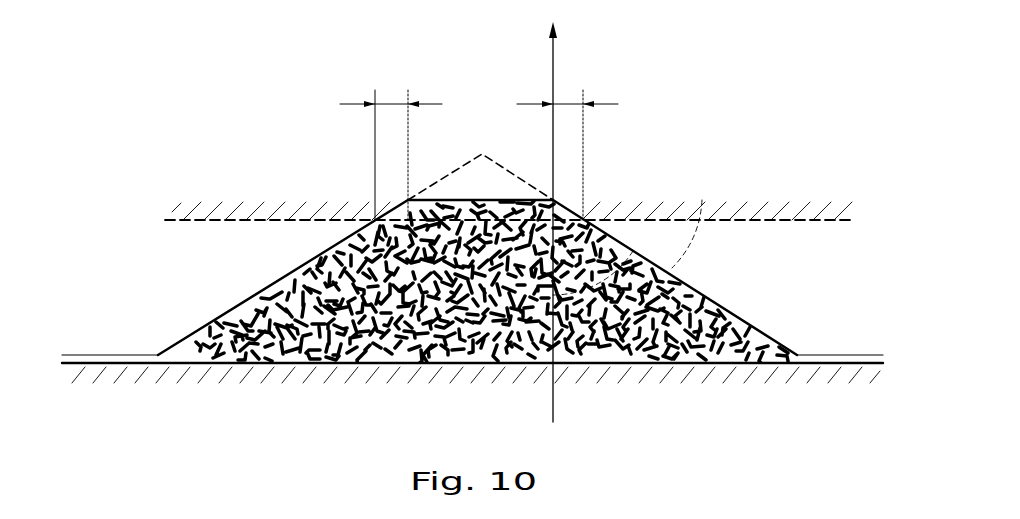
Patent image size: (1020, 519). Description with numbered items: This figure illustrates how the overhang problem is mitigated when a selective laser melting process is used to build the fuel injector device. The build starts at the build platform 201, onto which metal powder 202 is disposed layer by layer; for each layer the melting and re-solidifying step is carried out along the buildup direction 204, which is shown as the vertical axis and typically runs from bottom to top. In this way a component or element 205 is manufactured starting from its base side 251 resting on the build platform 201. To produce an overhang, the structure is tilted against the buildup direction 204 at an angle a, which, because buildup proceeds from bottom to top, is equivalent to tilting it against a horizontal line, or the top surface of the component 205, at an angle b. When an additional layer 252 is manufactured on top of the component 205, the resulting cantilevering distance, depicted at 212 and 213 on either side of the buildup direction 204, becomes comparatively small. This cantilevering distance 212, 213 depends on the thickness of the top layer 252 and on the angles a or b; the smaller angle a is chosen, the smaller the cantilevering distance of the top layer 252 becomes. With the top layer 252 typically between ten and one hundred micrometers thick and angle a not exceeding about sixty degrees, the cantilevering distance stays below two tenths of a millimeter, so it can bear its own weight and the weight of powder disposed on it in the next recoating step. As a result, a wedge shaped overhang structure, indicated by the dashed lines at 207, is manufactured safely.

The build platform 201 is at (723, 416).
The metal powder 202 is at (437, 309).
The buildup direction 204 is at (528, 218).
The component or element 205 is at (750, 289).
The wedge shaped overhang structure 207 is at (464, 162).
The cantilevering distance 212 is at (567, 103).
The cantilevering distance 213 is at (392, 103).
The base side 251 is at (808, 355).
The additional layer (top layer) 252 is at (228, 208).